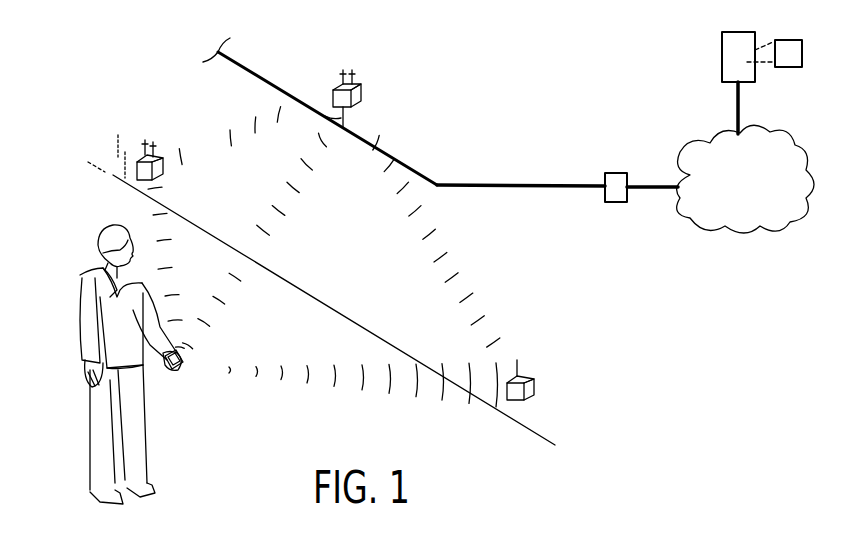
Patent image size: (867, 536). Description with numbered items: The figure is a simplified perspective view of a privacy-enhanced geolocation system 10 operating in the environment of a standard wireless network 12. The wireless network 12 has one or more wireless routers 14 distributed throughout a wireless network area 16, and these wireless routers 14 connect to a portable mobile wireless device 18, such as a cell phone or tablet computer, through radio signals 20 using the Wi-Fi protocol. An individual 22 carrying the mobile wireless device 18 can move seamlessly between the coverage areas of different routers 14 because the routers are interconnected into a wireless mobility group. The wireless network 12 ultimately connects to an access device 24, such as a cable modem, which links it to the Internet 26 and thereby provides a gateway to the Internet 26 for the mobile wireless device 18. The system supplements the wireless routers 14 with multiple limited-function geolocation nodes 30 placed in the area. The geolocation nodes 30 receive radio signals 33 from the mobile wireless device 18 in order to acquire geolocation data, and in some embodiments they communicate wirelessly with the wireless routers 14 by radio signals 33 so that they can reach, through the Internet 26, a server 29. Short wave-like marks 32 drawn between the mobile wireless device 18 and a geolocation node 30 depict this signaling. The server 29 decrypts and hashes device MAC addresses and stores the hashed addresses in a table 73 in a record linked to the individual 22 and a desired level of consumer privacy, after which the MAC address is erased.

The privacy-enhanced geolocation system 10 is at (538, 65).
The wireless network 12 is at (413, 117).
The wireless router 14 is at (340, 82).
The wireless network area 16 is at (125, 114).
The portable mobile wireless device 18 is at (160, 375).
The radio signals 20 is at (274, 205).
The individual 22 is at (88, 327).
The access device 24 is at (613, 205).
The Internet 26 is at (753, 192).
The server 29 is at (722, 50).
The geolocation node 30 is at (163, 171).
The wireless signal 32 is at (363, 377).
The radio signals 33 is at (209, 148).
The table 73 is at (785, 68).